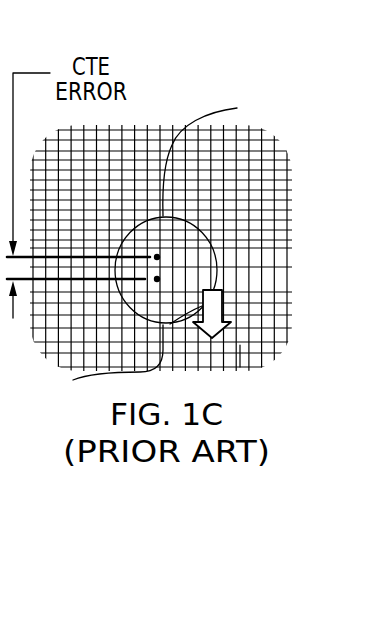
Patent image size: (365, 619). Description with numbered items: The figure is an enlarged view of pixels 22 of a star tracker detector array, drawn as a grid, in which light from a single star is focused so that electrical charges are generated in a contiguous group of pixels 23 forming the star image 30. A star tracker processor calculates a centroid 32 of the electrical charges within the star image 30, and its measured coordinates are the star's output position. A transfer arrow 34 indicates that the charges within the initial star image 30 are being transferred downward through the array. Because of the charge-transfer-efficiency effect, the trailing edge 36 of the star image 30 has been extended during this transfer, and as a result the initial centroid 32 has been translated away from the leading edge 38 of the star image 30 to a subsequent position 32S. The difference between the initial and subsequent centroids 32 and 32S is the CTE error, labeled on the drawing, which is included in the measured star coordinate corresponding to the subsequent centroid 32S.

The pixels 22 is at (167, 118).
The contiguous group of pixels 23 is at (240, 345).
The star image 30 is at (208, 225).
The subsequent position 32S is at (160, 256).
The centroid 32 is at (160, 279).
The transfer arrow 34 is at (223, 313).
The trailing edge 36 is at (215, 154).
The leading edge 38 is at (105, 361).